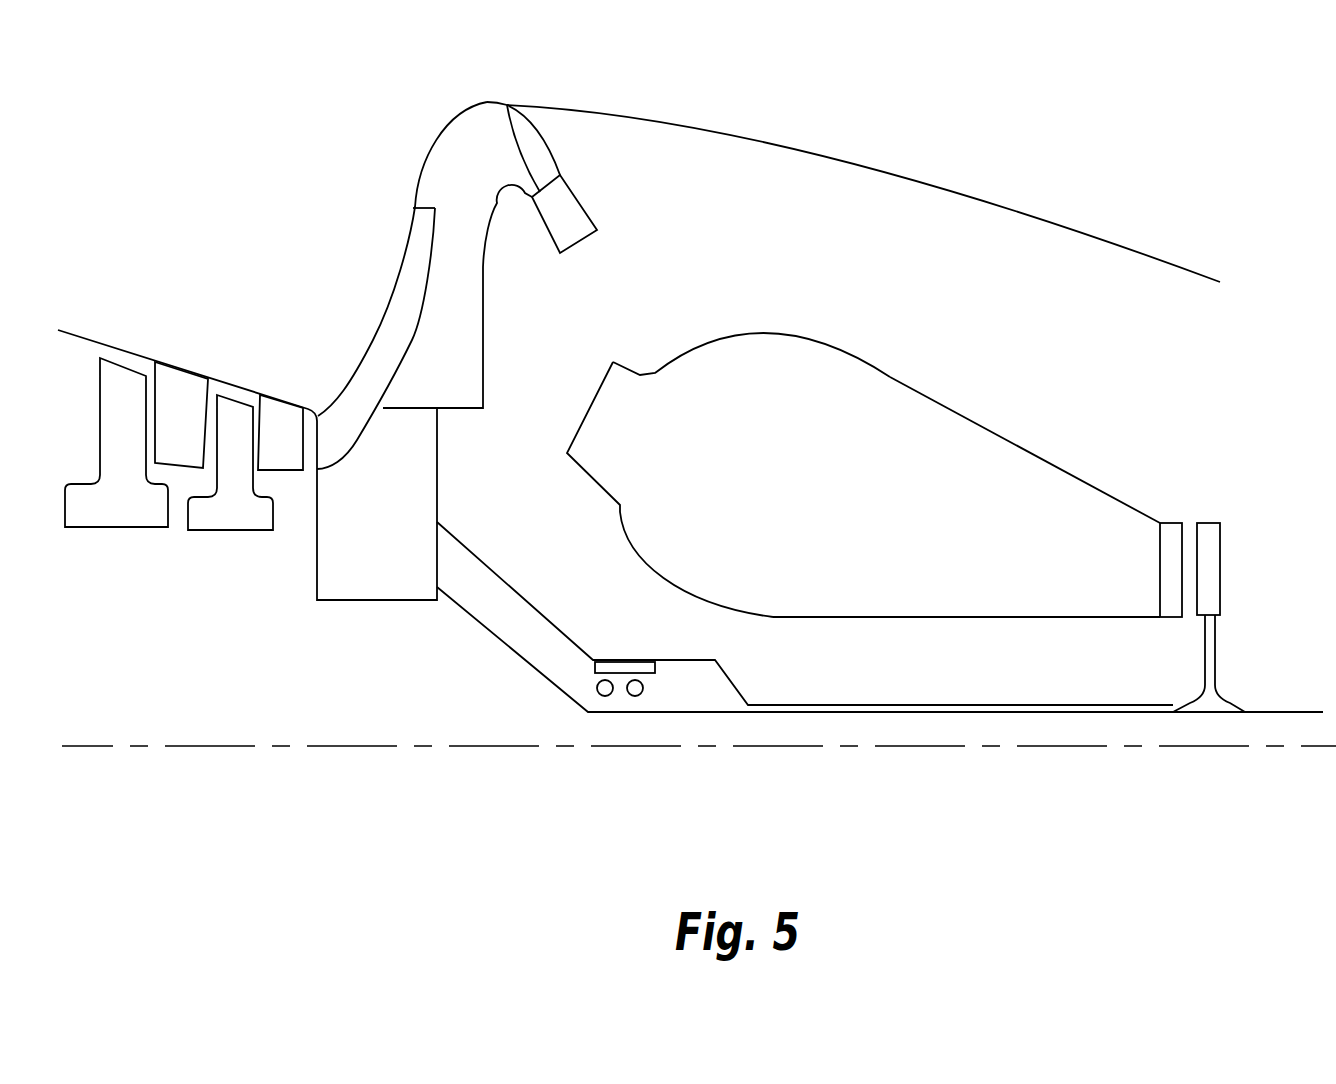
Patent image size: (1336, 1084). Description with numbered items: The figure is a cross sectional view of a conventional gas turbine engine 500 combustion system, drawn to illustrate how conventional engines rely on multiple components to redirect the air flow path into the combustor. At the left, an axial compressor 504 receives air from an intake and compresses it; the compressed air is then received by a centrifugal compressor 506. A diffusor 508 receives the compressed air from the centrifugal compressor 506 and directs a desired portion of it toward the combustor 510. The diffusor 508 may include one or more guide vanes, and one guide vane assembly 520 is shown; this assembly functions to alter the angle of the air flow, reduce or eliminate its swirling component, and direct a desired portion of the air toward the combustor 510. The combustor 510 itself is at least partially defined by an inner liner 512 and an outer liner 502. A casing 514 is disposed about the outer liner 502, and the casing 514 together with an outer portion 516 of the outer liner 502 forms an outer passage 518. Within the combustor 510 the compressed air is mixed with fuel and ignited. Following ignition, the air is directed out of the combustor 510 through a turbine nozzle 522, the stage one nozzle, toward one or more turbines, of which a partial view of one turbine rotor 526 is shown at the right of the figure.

The conventional gas turbine engine 500 is at (1078, 118).
The outer liner 502 is at (890, 377).
The axial compressor 504 is at (127, 352).
The centrifugal compressor 506 is at (392, 293).
The diffusor 508 is at (453, 117).
The combustor 510 is at (837, 467).
The inner liner 512 is at (740, 617).
The casing 514 is at (742, 133).
The outer portion of the outer liner 516 is at (838, 322).
The outer passage 518 is at (745, 244).
The guide vane assembly 520 is at (507, 105).
The turbine nozzle 522 is at (1168, 522).
The turbine rotor 526 is at (1242, 563).